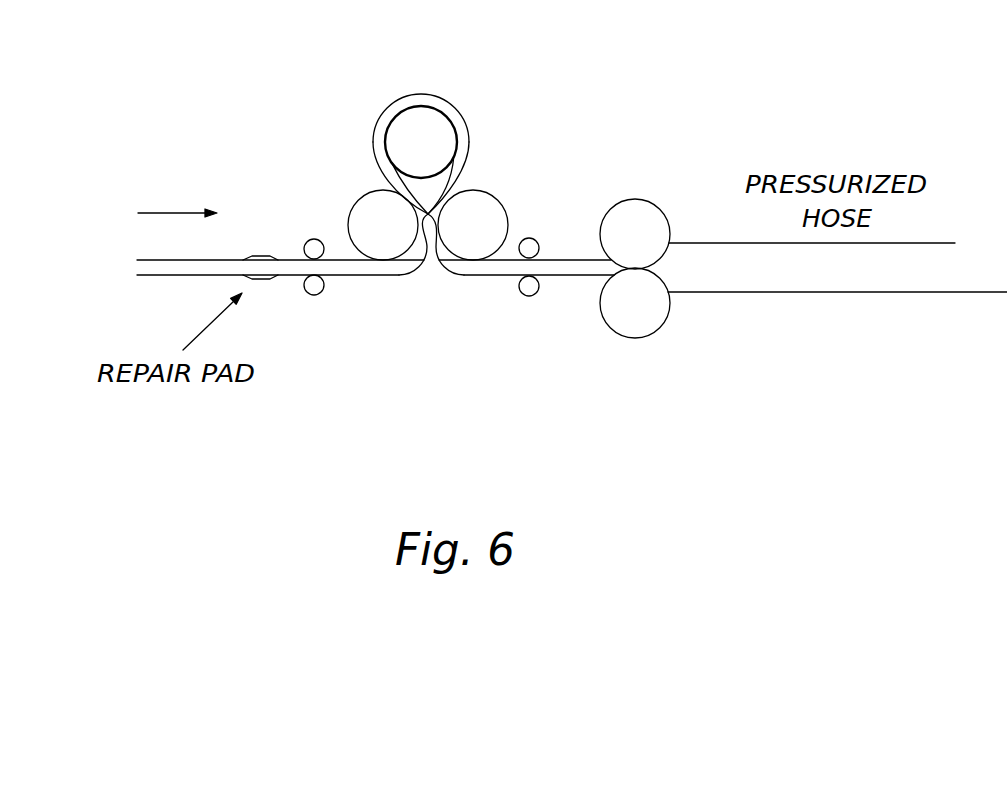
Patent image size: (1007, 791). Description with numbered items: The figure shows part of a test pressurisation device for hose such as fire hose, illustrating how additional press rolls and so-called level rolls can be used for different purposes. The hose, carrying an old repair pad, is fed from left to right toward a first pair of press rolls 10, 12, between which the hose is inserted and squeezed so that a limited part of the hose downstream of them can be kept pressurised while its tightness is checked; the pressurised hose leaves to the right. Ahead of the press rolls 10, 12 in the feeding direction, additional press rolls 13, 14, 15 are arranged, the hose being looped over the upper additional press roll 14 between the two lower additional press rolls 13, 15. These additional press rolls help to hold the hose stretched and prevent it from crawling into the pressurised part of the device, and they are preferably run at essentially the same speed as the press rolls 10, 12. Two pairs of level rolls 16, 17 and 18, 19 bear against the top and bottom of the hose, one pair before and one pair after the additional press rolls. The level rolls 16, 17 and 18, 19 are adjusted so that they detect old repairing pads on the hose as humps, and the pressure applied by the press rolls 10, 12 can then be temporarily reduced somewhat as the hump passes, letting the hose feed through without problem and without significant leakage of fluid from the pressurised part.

The press roll 10 is at (660, 203).
The press roll 12 is at (632, 338).
The additional press roll 13 is at (368, 192).
The additional press roll 14 is at (423, 108).
The additional press roll 15 is at (484, 191).
The level roll 16 is at (314, 238).
The level roll 17 is at (315, 296).
The level roll 18 is at (530, 238).
The level roll 19 is at (528, 297).